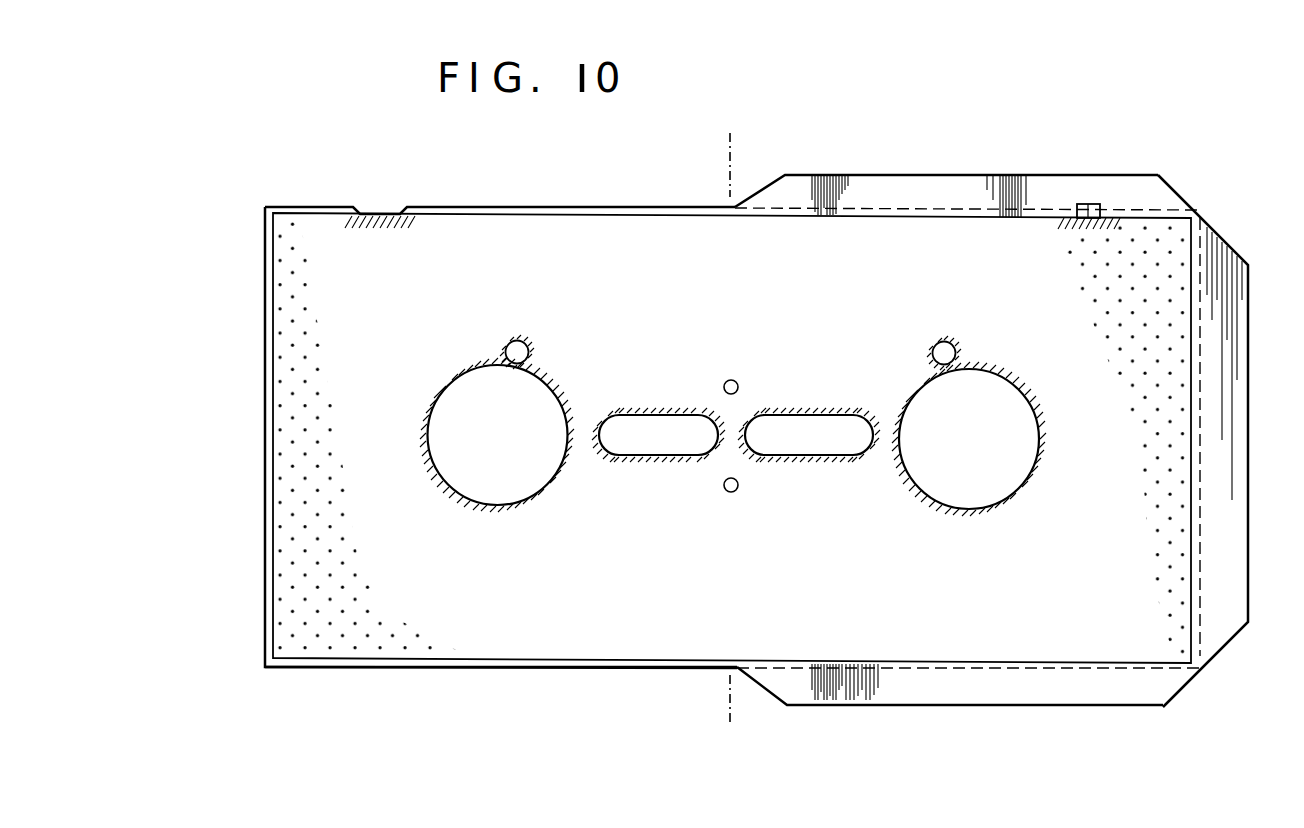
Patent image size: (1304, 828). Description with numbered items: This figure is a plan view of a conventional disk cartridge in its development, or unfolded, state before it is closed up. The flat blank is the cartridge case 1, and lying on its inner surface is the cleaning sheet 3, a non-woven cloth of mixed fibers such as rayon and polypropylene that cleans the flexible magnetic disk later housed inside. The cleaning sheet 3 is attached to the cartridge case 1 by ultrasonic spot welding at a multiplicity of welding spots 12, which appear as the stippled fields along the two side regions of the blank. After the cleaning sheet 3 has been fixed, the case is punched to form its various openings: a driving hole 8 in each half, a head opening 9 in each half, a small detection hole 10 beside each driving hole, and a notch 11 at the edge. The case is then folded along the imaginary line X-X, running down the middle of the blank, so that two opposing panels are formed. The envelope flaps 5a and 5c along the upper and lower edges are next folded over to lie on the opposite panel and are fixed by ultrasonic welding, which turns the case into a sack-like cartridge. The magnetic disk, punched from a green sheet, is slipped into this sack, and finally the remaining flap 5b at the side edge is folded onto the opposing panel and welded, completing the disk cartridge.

The cartridge case 1 is at (614, 207).
The cleaning sheet 3 is at (662, 663).
The envelope flap 5a is at (922, 188).
The flap 5b is at (1230, 482).
The envelope flap 5c is at (946, 690).
The driving hole 8 is at (473, 503).
The head opening 9 is at (617, 453).
The detection hole 10 is at (516, 341).
The notch 11 is at (390, 212).
The welding spots 12 is at (303, 578).